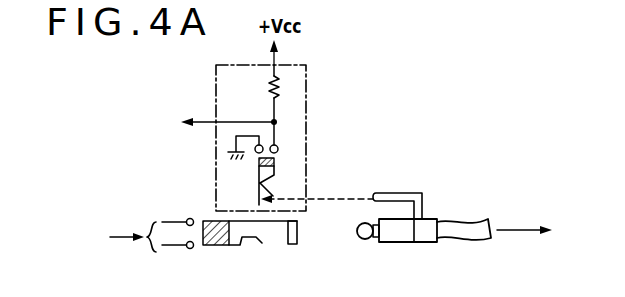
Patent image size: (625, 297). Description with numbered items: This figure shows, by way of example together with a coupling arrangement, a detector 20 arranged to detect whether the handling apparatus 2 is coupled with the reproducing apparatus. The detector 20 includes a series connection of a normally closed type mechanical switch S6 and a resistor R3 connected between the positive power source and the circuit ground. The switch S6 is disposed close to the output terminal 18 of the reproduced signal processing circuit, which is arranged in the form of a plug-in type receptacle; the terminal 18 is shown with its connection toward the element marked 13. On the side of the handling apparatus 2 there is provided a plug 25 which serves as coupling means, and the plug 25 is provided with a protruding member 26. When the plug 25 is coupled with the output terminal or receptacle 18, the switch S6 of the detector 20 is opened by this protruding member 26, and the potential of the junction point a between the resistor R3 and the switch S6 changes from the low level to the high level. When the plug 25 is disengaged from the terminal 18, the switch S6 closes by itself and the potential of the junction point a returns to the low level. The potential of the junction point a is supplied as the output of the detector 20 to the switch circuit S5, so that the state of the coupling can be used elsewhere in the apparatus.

The output terminal 18 is at (230, 246).
The detector 20 is at (290, 138).
The plug 25 is at (407, 243).
The protruding member 26 is at (392, 192).
The resistor R3 is at (266, 90).
The normally closed type mechanical switch S6 is at (258, 170).
The junction point a is at (278, 123).
The switch circuit S5 is at (210, 125).
The connection to 13 is at (117, 237).
The handling apparatus 2 is at (539, 233).